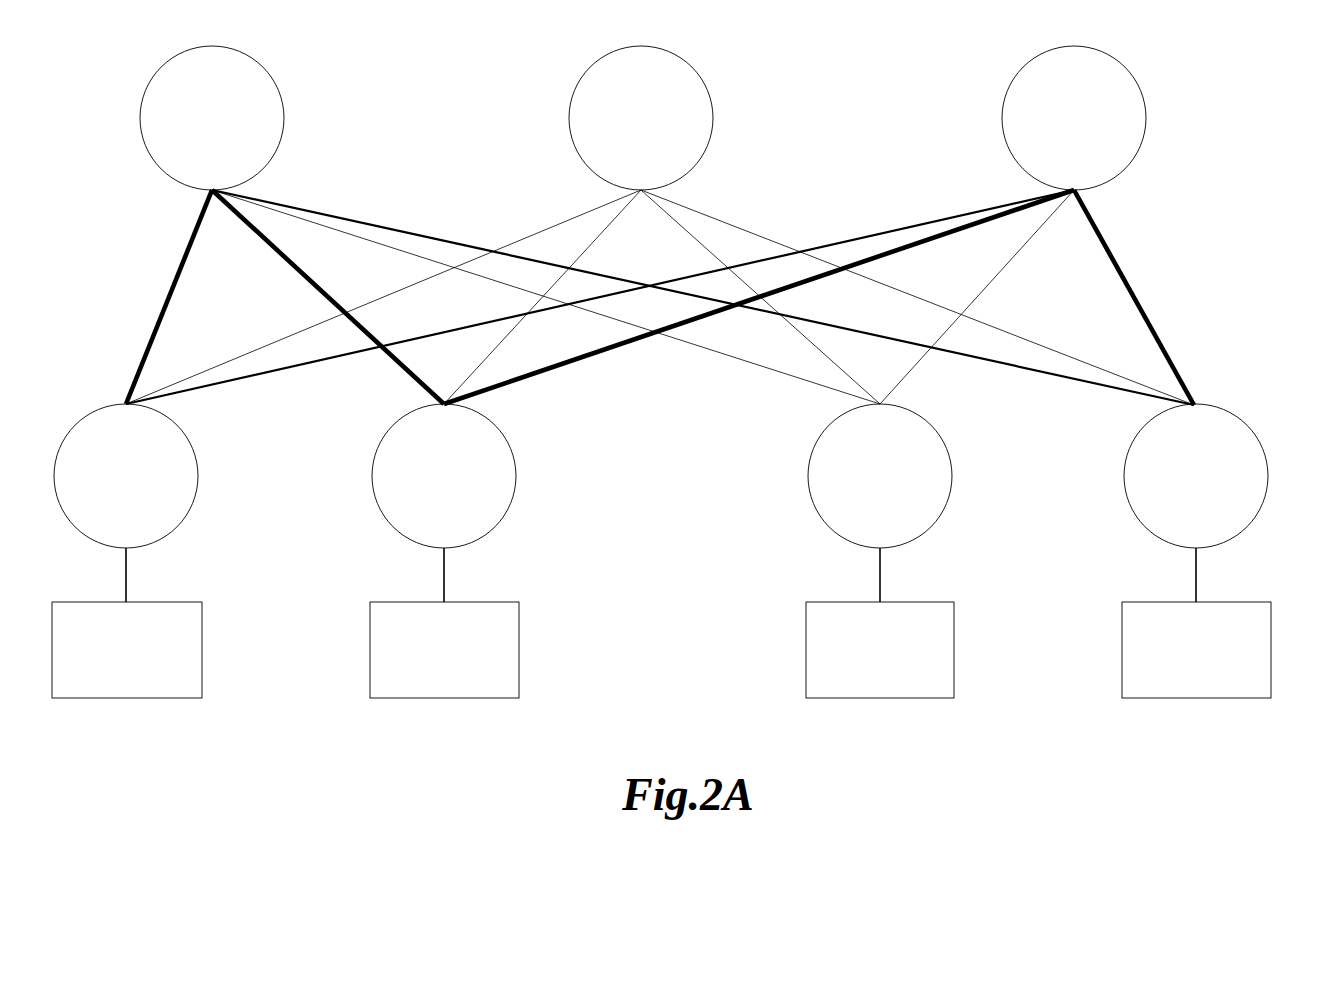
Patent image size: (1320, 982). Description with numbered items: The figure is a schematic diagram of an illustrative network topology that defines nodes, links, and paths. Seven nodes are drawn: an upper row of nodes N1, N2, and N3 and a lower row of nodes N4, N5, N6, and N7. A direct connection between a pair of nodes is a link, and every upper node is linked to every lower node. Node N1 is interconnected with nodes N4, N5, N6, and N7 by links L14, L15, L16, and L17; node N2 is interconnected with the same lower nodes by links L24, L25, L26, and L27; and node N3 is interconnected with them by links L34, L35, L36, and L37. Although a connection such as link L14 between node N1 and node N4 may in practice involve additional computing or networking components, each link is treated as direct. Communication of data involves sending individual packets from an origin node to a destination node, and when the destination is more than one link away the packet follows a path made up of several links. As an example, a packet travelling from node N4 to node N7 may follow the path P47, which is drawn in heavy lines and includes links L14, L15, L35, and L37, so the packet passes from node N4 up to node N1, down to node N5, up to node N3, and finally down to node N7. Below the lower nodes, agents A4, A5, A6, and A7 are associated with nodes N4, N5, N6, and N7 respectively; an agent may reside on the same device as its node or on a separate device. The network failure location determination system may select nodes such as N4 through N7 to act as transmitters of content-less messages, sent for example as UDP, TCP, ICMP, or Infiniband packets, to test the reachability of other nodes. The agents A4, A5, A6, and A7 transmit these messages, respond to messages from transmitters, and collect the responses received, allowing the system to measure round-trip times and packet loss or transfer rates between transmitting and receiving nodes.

The node N1 is at (220, 118).
The node N2 is at (655, 118).
The node N3 is at (1080, 118).
The node N4 is at (141, 476).
The node N5 is at (460, 476).
The node N6 is at (892, 476).
The node N7 is at (1197, 473).
The agent A4 is at (141, 623).
The agent A5 is at (462, 623).
The agent A6 is at (897, 623).
The agent A7 is at (1211, 623).
The link L14 is at (169, 297).
The link L15 is at (328, 297).
The link L16 is at (546, 297).
The link L17 is at (703, 297).
The link L24 is at (383, 295).
The link L25 is at (542, 297).
The link L26 is at (760, 297).
The link L27 is at (917, 294).
The link L34 is at (600, 293).
The link L35 is at (759, 297).
The link L36 is at (977, 297).
The link L37 is at (1134, 297).
The path P47 is at (649, 297).